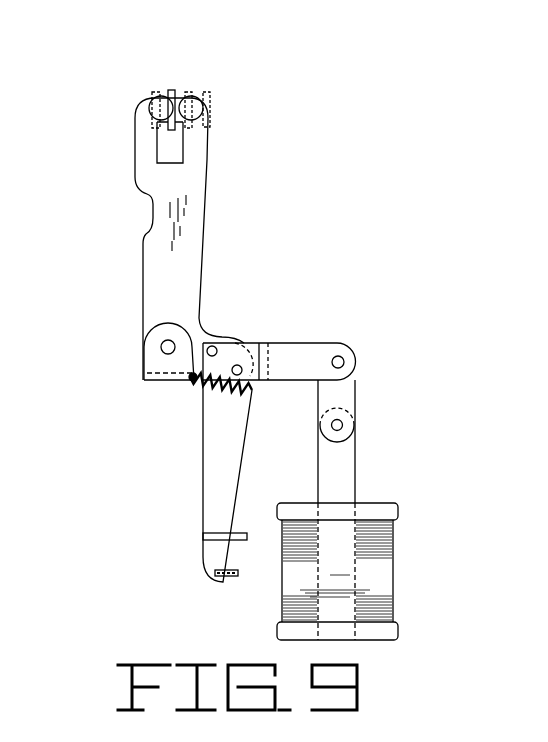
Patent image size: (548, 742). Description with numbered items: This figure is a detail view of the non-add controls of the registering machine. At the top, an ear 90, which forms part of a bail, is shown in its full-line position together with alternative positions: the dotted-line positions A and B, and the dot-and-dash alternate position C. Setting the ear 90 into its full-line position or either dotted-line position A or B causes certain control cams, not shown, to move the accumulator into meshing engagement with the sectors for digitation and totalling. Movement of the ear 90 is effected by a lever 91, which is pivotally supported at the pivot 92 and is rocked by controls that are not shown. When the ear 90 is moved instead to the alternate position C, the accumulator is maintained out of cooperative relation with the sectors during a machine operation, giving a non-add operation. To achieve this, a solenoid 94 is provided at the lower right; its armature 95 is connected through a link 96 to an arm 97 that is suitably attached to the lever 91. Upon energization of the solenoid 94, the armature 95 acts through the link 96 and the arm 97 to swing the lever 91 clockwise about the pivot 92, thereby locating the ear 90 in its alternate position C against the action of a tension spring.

The ear 90 is at (172, 91).
The dotted line position A is at (153, 93).
The dotted line position B is at (187, 92).
The alternate position C is at (210, 102).
The lever 91 is at (150, 280).
The pivot 92 is at (165, 348).
The solenoid 94 is at (390, 553).
The armature 95 is at (347, 465).
The link 96 is at (347, 392).
The arm 97 is at (293, 347).